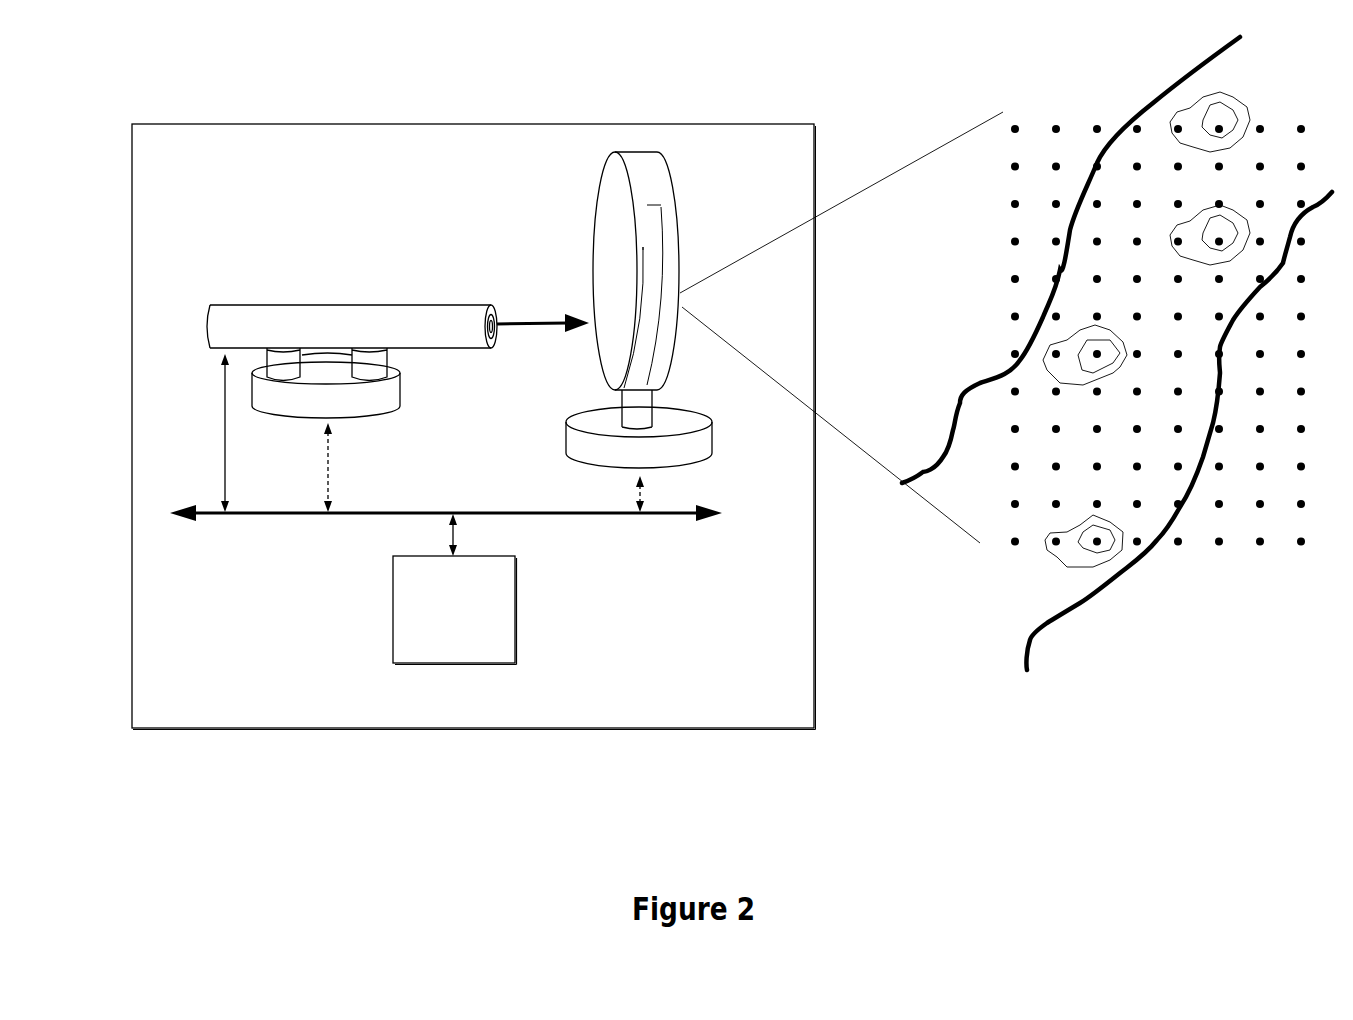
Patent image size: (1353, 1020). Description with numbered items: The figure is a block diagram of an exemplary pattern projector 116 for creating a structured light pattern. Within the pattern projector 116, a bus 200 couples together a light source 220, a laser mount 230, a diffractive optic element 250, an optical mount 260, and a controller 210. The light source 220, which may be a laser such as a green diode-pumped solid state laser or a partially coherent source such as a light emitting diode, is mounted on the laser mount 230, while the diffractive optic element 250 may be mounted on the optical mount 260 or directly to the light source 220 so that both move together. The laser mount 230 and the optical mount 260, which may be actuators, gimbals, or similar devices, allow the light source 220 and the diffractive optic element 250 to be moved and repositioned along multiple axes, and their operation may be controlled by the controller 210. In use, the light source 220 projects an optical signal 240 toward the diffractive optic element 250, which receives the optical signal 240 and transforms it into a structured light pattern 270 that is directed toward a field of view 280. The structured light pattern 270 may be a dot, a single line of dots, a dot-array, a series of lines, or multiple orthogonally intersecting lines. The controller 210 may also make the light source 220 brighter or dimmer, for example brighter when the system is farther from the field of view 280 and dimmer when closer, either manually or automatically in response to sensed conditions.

The pattern projector 116 is at (195, 166).
The bus 200 is at (705, 500).
The controller 210 is at (500, 656).
The light source 220 is at (345, 340).
The laser mount 230 is at (345, 400).
The optical signal 240 is at (553, 318).
The diffractive optic element 250 is at (666, 194).
The optical mount 260 is at (654, 466).
The structured light pattern 270 is at (1075, 114).
The field of view 280 is at (1105, 672).